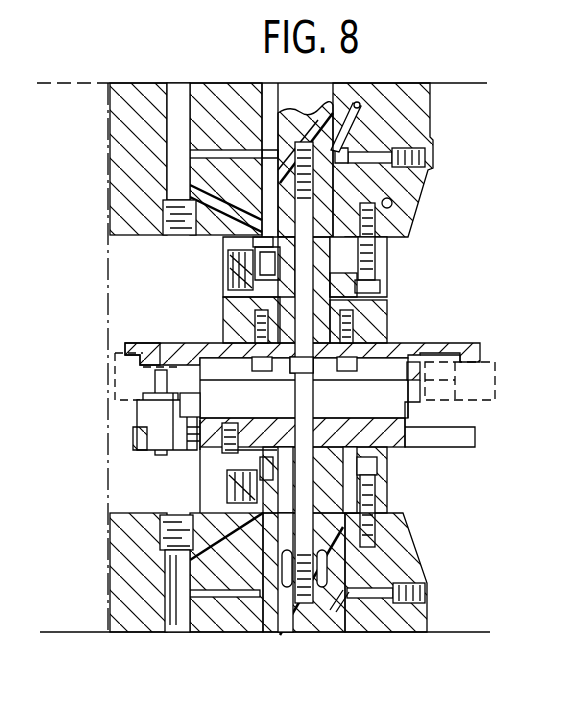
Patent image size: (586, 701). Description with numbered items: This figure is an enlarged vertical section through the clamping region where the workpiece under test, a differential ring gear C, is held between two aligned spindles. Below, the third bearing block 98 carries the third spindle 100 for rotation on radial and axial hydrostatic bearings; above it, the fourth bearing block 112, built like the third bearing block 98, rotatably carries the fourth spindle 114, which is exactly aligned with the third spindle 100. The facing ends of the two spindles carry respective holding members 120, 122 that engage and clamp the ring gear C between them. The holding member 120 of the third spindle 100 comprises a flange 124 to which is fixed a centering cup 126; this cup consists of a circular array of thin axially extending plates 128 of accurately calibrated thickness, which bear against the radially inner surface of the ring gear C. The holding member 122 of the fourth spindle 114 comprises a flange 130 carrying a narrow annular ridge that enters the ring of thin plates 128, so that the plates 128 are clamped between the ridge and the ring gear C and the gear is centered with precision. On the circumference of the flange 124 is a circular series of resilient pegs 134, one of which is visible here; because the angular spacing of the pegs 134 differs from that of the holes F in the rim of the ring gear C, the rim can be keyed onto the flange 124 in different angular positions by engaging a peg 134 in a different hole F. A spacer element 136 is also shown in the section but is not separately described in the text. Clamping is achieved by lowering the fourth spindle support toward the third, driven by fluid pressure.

The third bearing block 98 is at (408, 562).
The third spindle 100 is at (370, 620).
The fourth bearing block 112 is at (420, 113).
The fourth spindle 114 is at (335, 168).
The holding member 120 is at (214, 462).
The holding member 122 is at (216, 322).
The flange 124 is at (400, 445).
The centering cup 126 is at (417, 416).
The thin axially extending plates 128 is at (427, 378).
The flange 130 is at (448, 343).
The resilient pegs 134 is at (164, 455).
The spacer block 136 is at (408, 370).
The holes F is at (160, 362).
The differential ring gear C is at (130, 392).